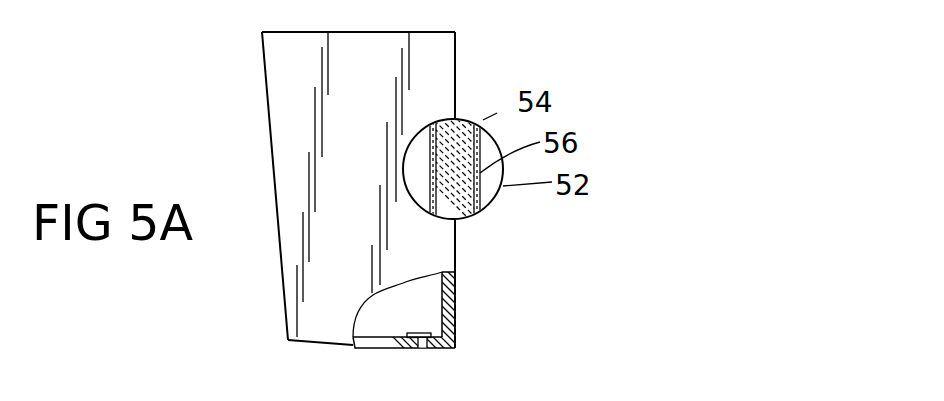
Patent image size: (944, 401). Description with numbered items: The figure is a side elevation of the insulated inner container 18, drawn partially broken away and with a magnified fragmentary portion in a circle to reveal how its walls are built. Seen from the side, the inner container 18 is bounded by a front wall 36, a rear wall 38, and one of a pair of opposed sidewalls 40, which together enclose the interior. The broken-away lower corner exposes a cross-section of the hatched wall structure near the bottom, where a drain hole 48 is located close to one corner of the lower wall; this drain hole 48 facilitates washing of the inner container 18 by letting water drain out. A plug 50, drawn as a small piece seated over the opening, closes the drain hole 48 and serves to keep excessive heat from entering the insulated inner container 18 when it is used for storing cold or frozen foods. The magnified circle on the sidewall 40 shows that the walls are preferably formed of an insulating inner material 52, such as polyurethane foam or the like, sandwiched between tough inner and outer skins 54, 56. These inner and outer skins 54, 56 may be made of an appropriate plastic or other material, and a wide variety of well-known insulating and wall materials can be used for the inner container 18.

The inner container 18 is at (502, 70).
The front wall 36 is at (283, 270).
The sidewall 40 is at (430, 241).
The rear wall 38 is at (450, 280).
The plug 50 is at (423, 330).
The drain hole 48 is at (421, 348).
The insulating inner material 52 is at (460, 190).
The inner skin 54 is at (432, 160).
The outer skin 56 is at (477, 176).